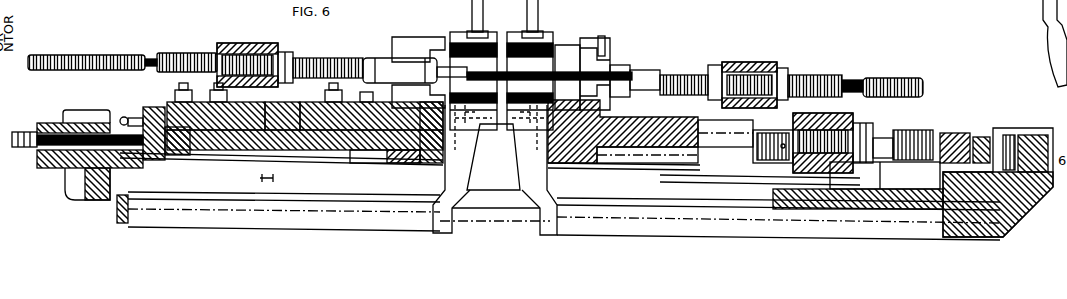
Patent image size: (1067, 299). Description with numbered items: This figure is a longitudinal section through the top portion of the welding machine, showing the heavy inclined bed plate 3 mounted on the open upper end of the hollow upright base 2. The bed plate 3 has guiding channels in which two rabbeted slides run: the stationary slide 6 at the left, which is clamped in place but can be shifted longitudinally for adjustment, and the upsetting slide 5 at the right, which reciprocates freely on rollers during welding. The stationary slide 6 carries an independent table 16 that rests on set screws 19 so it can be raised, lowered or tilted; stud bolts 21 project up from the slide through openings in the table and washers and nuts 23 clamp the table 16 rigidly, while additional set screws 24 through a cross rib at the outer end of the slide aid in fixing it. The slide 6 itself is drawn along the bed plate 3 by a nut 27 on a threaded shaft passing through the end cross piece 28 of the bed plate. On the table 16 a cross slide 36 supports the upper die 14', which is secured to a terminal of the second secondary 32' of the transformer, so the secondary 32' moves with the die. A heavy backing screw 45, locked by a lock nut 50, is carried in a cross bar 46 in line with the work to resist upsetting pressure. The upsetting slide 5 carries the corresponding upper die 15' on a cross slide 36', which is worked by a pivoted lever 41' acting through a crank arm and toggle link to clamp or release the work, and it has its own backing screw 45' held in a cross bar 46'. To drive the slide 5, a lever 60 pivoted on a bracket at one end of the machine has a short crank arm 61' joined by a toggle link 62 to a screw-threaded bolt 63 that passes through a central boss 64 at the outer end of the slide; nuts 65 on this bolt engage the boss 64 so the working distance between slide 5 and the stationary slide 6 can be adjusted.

The hollow upright base 2 is at (117, 217).
The bed plate 3 is at (300, 168).
The upsetting slide 5 is at (586, 171).
The stationary slide 6 is at (310, 160).
The upper welding die 14' is at (458, 73).
The upper welding die 15' is at (542, 74).
The table 16 is at (282, 109).
The set screw 19 is at (363, 163).
The stud bolt 21 is at (179, 88).
The washers and nuts 23 is at (175, 97).
The set screw 24 is at (124, 116).
The nut 27 is at (28, 148).
The end cross piece 28 is at (62, 123).
The second secondary 32' is at (495, 170).
The cross slide 36 is at (412, 71).
The cross slide 36' is at (607, 67).
The pivoted lever 41' is at (514, 19).
The backing screw 45 is at (328, 61).
The backing screw 45' is at (684, 74).
The cross bar 46 is at (247, 58).
The cross bar 46' is at (748, 75).
The lock nut 50 is at (296, 47).
The lever 60 is at (1023, 130).
The short crank arm 61' is at (983, 138).
The toggle link 62 is at (943, 134).
The screw-threaded bolt 63 is at (910, 133).
The boss 64 is at (848, 119).
The nuts 65 is at (763, 160).